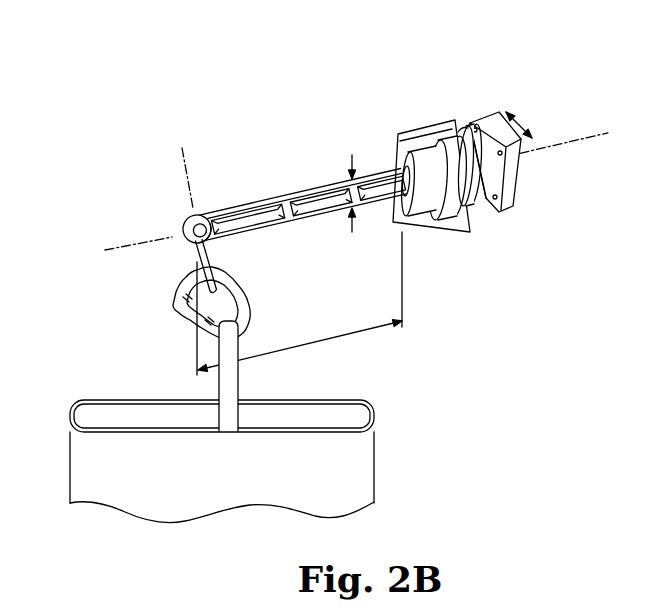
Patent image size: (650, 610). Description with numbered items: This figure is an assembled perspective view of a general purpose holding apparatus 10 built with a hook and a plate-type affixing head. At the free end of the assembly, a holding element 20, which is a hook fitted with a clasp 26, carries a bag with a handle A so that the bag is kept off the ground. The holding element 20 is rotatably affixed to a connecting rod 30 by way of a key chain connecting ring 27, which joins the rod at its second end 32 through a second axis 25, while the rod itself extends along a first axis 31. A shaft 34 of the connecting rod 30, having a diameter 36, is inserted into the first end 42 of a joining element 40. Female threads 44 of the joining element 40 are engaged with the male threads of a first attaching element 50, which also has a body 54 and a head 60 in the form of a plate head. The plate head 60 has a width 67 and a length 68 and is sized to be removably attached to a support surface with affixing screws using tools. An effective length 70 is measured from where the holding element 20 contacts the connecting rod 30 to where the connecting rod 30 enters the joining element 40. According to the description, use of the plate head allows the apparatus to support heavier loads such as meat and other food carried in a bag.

The general purpose holding apparatus 10 is at (392, 73).
The holding element 20 is at (206, 303).
The second axis 25 is at (188, 178).
The clasp 26 is at (173, 301).
The key chain connecting ring 27 is at (196, 258).
The connecting rod 30 is at (264, 189).
The first axis 31 is at (113, 248).
The second end 32 is at (172, 226).
The shaft 34 is at (312, 166).
The diameter 36 is at (350, 184).
The joining element 40 is at (452, 222).
The first end 42 is at (400, 215).
The female threads 44 is at (470, 128).
The first attaching element 50 is at (467, 147).
The body 54 is at (478, 184).
The head 60 is at (514, 172).
The width 67 is at (517, 157).
The length 68 is at (518, 126).
The effective length 70 is at (312, 344).
The bag with a handle A is at (228, 381).